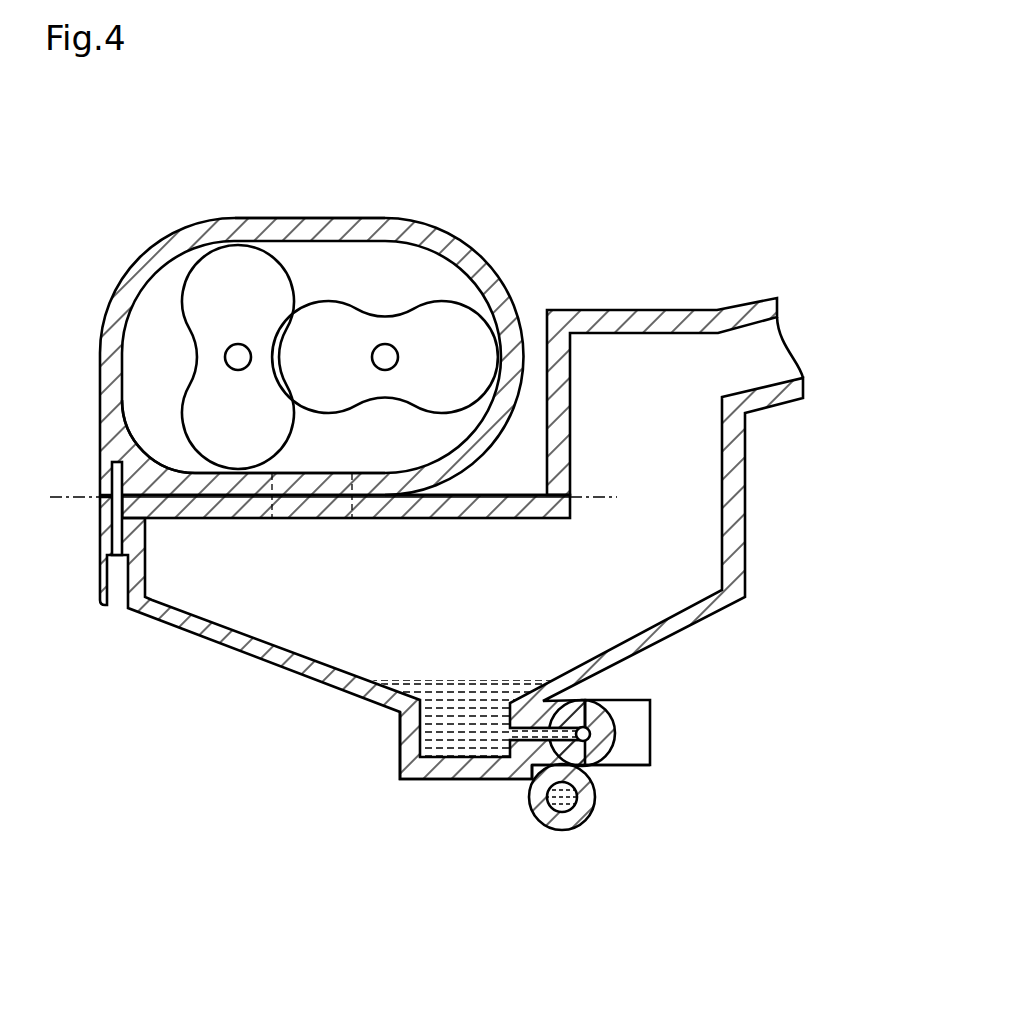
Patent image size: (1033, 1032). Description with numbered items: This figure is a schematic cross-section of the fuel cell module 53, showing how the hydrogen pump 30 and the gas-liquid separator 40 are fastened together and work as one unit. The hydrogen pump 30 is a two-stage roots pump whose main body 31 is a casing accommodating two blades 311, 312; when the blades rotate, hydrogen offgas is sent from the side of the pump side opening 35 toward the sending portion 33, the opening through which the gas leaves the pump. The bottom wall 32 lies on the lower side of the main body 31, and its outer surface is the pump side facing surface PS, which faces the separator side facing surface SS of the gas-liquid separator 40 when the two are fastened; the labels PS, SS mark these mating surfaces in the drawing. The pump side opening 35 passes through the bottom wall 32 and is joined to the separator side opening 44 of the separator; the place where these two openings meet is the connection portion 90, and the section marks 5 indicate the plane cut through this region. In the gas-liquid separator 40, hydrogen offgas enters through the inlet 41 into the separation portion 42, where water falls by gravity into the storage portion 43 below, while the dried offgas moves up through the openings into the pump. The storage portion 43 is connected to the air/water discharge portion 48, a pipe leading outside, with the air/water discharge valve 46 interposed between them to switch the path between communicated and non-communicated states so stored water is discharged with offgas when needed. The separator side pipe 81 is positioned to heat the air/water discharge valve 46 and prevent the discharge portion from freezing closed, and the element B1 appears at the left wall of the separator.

The fuel cell module 53 is at (767, 163).
The hydrogen pump 30 is at (383, 201).
The main body 31 is at (102, 318).
The bottom wall 32 is at (160, 470).
The sending portion 33 is at (290, 218).
The blade 311 is at (185, 315).
The blade 312 is at (418, 310).
The pump side opening 35 is at (318, 473).
The separator side opening 44 is at (310, 518).
The connection portion 90 is at (352, 518).
The pump side / seal side space PS, SS is at (440, 497).
The section line V-V 5 is at (64, 501).
The inlet 41 is at (806, 333).
The separation portion 42 is at (641, 606).
The gas-liquid separator 40 is at (205, 682).
The storage portion 43 is at (413, 780).
The bracket plate B1 is at (112, 612).
The air/water discharge valve 46 is at (652, 708).
The air/water discharge portion 48 is at (597, 767).
The separator side pipe 81 is at (566, 832).